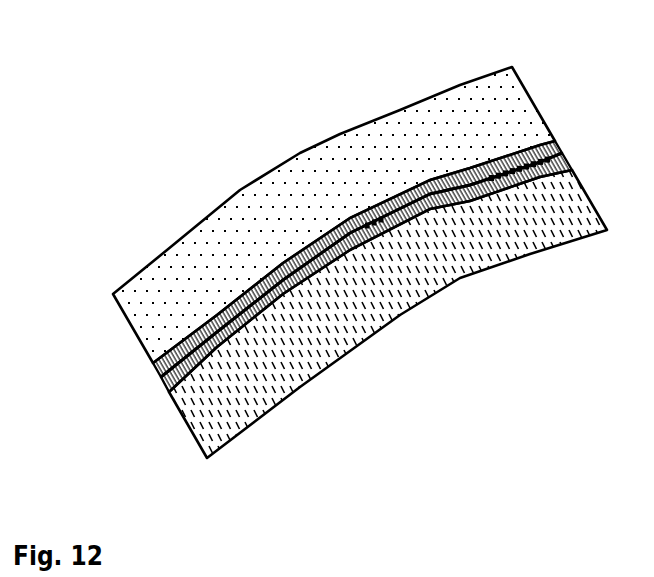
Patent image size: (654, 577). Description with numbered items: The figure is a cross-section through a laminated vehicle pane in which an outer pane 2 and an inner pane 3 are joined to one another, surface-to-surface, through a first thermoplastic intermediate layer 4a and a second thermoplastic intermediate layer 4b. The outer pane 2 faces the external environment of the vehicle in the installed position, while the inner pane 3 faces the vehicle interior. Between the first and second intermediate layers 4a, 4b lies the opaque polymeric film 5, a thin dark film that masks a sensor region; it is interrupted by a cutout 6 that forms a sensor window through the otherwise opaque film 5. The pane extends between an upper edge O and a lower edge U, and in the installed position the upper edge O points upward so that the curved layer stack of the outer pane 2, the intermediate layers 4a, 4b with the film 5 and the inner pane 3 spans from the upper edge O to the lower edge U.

The outer pane 2 is at (133, 308).
The inner pane 3 is at (193, 407).
The first thermoplastic intermediate layer 4a is at (165, 368).
The second thermoplastic intermediate layer 4b is at (176, 384).
The opaque polymeric film 5 is at (376, 224).
The cutout 6 is at (468, 184).
The upper edge O is at (575, 167).
The lower edge U is at (190, 453).